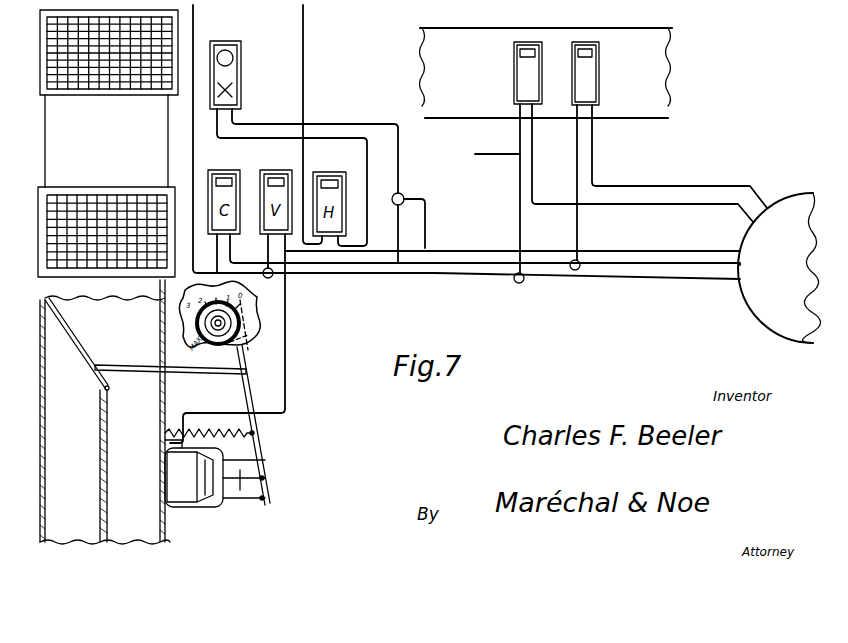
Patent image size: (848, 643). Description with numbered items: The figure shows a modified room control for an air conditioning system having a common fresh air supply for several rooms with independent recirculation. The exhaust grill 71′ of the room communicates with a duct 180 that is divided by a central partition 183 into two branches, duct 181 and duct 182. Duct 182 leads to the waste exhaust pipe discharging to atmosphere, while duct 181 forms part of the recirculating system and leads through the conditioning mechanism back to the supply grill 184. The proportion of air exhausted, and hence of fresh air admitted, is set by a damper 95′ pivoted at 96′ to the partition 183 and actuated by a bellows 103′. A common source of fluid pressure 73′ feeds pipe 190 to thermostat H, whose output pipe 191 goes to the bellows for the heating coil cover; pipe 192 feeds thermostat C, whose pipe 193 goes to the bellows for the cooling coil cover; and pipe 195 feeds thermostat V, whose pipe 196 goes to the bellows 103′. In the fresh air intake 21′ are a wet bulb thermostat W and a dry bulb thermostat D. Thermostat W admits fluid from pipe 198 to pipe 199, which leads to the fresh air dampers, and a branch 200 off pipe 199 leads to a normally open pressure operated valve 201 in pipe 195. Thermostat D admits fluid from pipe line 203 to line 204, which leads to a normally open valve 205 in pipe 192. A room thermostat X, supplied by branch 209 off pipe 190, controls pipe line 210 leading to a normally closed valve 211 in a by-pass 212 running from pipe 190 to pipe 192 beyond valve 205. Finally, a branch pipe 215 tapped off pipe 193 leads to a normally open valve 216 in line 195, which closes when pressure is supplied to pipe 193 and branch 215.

The supply grill 184 is at (84, 93).
The exhaust grill 71′ is at (113, 193).
The duct 180 is at (105, 420).
The duct 181 is at (61, 421).
The duct 182 is at (140, 411).
The central partition 183 is at (100, 477).
The damper 95′ is at (72, 333).
The pivot 96′ is at (104, 389).
The bellows 103′ is at (178, 482).
The intake 21′ is at (645, 22).
The common source of fluid pressure 73′ is at (779, 268).
The pipe 193 is at (193, 152).
The pipe 192 is at (435, 275).
The pipe 195 is at (636, 296).
The pressure operated valve 216 is at (267, 278).
The branch pipe 215 is at (483, 253).
The pipe 190 is at (490, 238).
The pipe 196 is at (287, 331).
The pipe 191 is at (305, 83).
The branch 209 is at (252, 140).
The pipe line 210 is at (360, 125).
The pressure operated valve 211 is at (411, 185).
The by-pass 212 is at (435, 222).
The pipe 199 is at (498, 155).
The branch 200 is at (520, 197).
The pressure operated valve 201 is at (521, 283).
The pipe 198 is at (625, 207).
The line 204 is at (577, 184).
The pressure operated valve 205 is at (576, 271).
The pipe line 203 is at (688, 189).